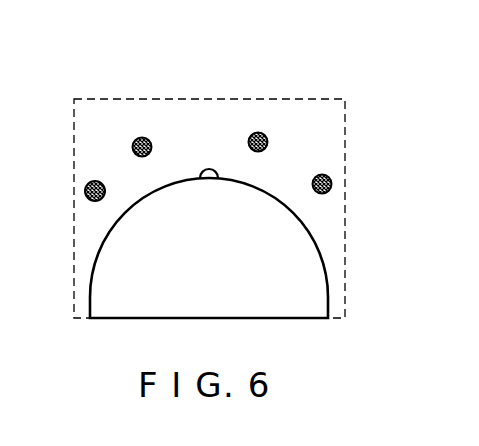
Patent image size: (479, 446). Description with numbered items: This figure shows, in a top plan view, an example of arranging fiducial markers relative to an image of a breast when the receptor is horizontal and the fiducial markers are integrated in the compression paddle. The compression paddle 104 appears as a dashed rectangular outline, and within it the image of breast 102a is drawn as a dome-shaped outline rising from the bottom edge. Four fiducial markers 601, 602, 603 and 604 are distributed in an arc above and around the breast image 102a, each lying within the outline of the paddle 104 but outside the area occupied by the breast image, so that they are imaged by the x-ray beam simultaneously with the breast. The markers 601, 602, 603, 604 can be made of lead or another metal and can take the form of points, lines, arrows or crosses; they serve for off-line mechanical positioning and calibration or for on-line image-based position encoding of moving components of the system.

The compression paddle 104 is at (74, 106).
The image of breast 102a is at (305, 262).
The fiducial marker 601 is at (97, 181).
The fiducial marker 602 is at (143, 137).
The fiducial marker 603 is at (261, 132).
The fiducial marker 604 is at (326, 176).